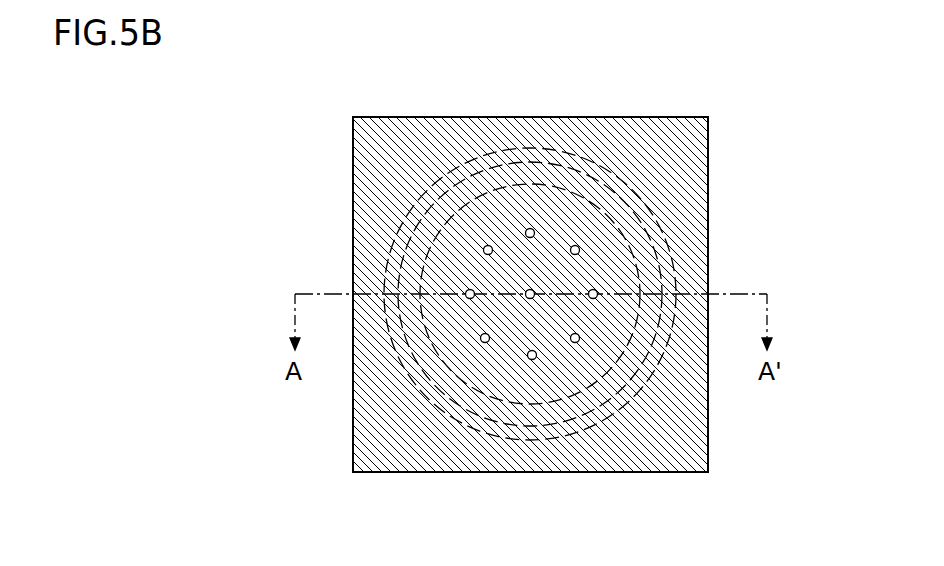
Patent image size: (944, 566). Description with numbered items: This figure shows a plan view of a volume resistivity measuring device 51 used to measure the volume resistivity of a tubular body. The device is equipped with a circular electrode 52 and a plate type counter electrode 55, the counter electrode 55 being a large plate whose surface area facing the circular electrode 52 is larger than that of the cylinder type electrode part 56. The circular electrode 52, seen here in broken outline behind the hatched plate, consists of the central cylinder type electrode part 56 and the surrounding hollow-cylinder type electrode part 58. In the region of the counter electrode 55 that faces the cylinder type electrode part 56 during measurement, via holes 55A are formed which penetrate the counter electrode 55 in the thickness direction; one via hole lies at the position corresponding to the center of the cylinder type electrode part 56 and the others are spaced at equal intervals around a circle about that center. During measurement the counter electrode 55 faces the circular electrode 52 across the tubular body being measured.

The volume resistivity measuring device 51 is at (740, 78).
The counter electrode 55 is at (697, 151).
The via holes 55A is at (468, 290).
The hollow-cylinder type electrode part 58 is at (640, 196).
The cylinder type electrode part 56 is at (615, 242).
The circular electrode 52 is at (658, 375).